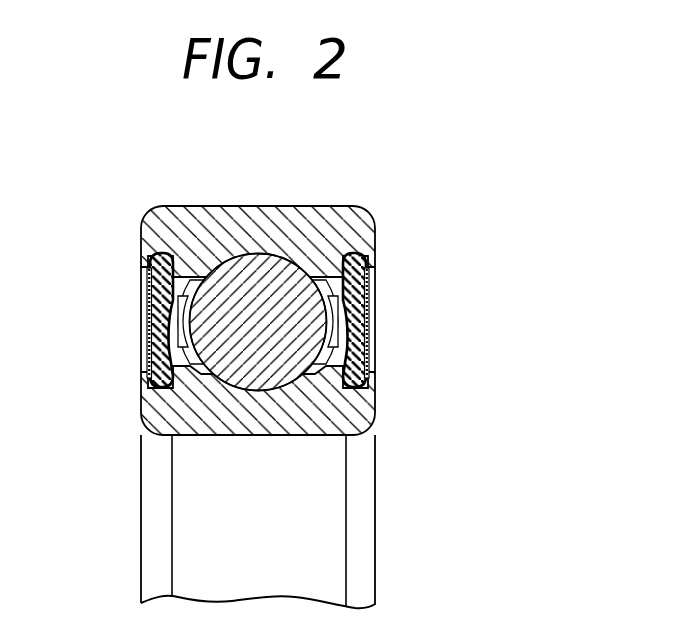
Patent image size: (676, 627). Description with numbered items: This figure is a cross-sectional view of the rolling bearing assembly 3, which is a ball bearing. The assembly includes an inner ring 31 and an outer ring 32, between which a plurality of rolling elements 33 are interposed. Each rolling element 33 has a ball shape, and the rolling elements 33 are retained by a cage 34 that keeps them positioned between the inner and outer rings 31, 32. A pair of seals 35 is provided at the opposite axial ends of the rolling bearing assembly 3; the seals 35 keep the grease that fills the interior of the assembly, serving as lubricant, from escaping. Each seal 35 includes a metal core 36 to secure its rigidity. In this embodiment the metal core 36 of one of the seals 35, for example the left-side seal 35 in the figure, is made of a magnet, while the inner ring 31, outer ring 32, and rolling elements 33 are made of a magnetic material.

The rolling bearing assembly 3 is at (490, 228).
The inner ring 31 is at (287, 423).
The outer ring 32 is at (262, 222).
The rolling elements 33 is at (292, 300).
The cage 34 is at (335, 341).
The seals 35 is at (155, 330).
The metal core 36 is at (147, 272).